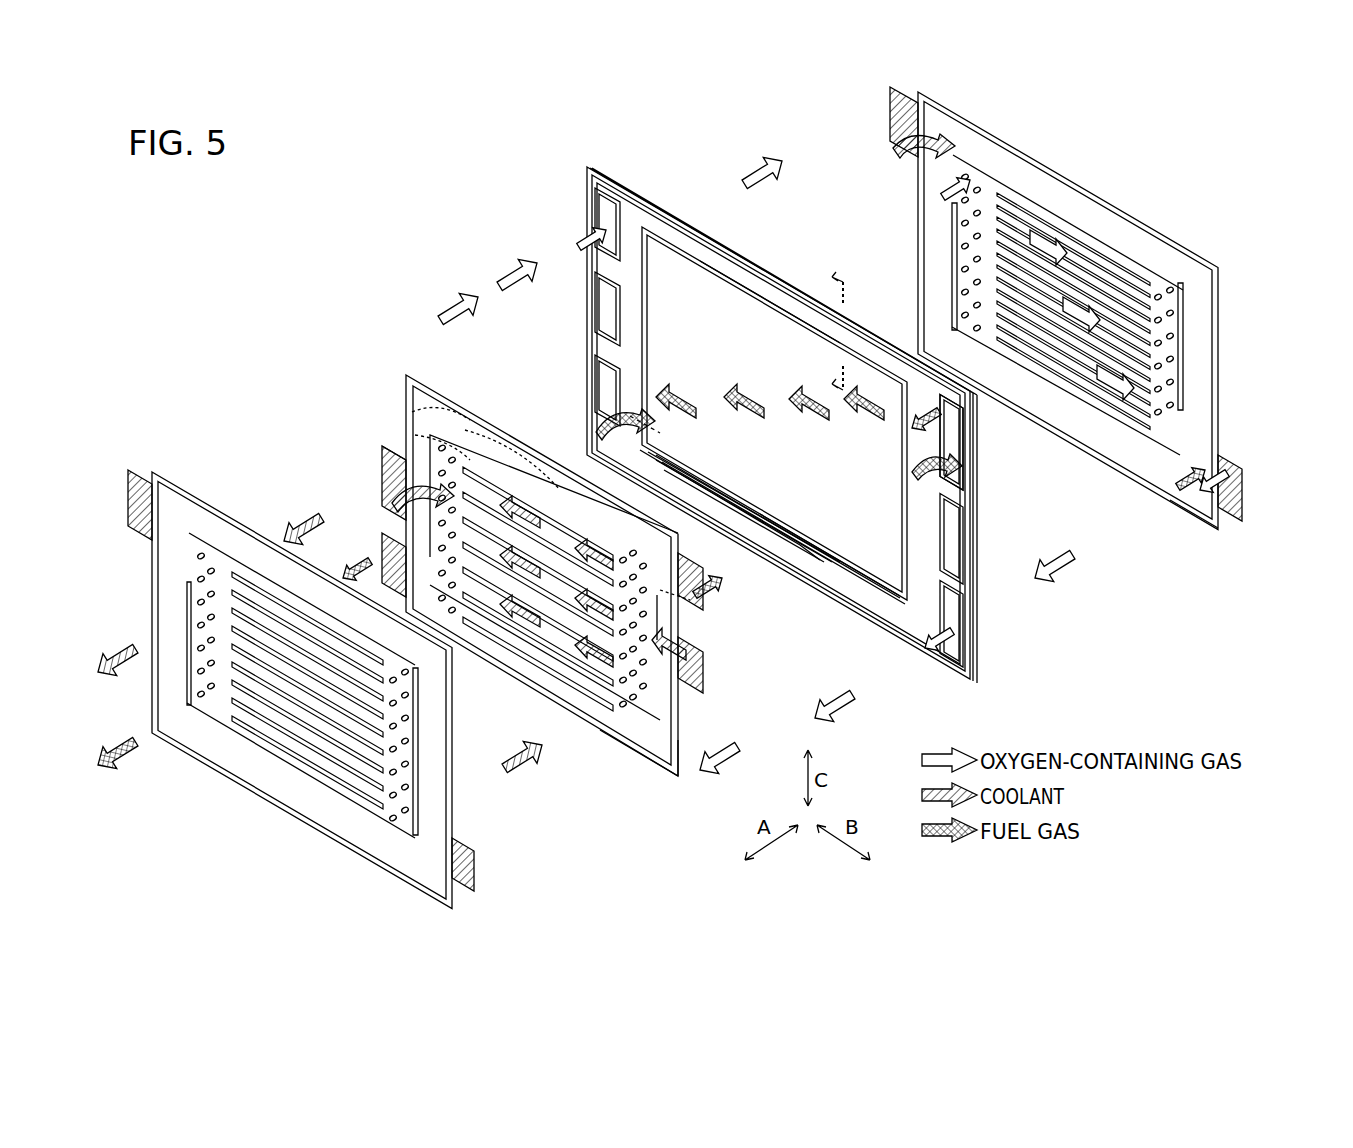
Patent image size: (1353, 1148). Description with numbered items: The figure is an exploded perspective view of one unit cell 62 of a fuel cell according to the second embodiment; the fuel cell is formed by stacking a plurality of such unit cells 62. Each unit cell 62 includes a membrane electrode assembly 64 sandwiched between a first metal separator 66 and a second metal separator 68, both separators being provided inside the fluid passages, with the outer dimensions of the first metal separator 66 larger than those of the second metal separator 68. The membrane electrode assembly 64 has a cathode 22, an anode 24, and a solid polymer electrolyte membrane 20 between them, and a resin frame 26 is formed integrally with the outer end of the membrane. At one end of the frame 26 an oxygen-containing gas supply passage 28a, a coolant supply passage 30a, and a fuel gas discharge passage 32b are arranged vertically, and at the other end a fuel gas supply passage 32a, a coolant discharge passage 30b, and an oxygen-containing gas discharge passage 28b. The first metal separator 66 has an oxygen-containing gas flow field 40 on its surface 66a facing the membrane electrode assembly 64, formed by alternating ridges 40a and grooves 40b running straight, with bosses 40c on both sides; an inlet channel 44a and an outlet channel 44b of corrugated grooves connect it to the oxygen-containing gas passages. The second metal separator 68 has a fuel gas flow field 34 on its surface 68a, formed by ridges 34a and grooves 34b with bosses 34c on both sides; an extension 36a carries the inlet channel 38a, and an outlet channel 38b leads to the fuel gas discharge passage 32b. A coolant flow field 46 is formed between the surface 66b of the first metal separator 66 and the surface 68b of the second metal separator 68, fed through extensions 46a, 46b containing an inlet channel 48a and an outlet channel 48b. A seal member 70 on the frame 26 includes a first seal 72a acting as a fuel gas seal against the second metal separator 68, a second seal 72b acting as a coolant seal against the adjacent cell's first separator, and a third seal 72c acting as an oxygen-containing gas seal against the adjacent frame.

The solid polymer electrolyte membrane 20 is at (970, 504).
The cathode 22 is at (768, 320).
The anode 24 is at (885, 598).
The resin frame 26 is at (975, 472).
The oxygen-containing gas supply passage 28a is at (594, 210).
The oxygen-containing gas discharge passage 28b is at (965, 612).
The coolant supply passage 30a is at (965, 528).
The coolant discharge passage 30b is at (596, 300).
The fuel gas supply passage 32a is at (965, 432).
The fuel gas discharge passage 32b is at (597, 372).
The fuel gas flow field 34 is at (690, 460).
The ridges 34a is at (528, 500).
The grooves 34b is at (480, 500).
The bosses 34c is at (412, 412).
The extension 36a is at (905, 158).
The inlet channel 38a is at (700, 557).
The outlet channel 38b is at (382, 548).
The oxygen-containing gas flow field 40 is at (1030, 240).
The ridges 40a is at (1078, 250).
The grooves 40b is at (1128, 290).
The bosses 40c is at (963, 213).
The inlet channel 44a is at (896, 132).
The outlet channel 44b is at (1222, 458).
The coolant flow field 46 is at (572, 640).
The extension 46a is at (690, 626).
The extension 46b is at (385, 468).
The inlet channel 48a is at (706, 655).
The outlet channel 48b is at (382, 486).
The unit cell 62 is at (250, 282).
The membrane electrode assembly 64 is at (588, 166).
The first metal separator 66 is at (150, 476).
The surface 66a is at (1163, 480).
The surface 66b is at (1186, 505).
The second metal separator 68 is at (400, 372).
The surface 68a is at (662, 775).
The surface 68b is at (652, 752).
The seal member 70 is at (786, 568).
The first seal 72a is at (845, 545).
The second seal 72b is at (825, 550).
The third seal 72c is at (790, 548).